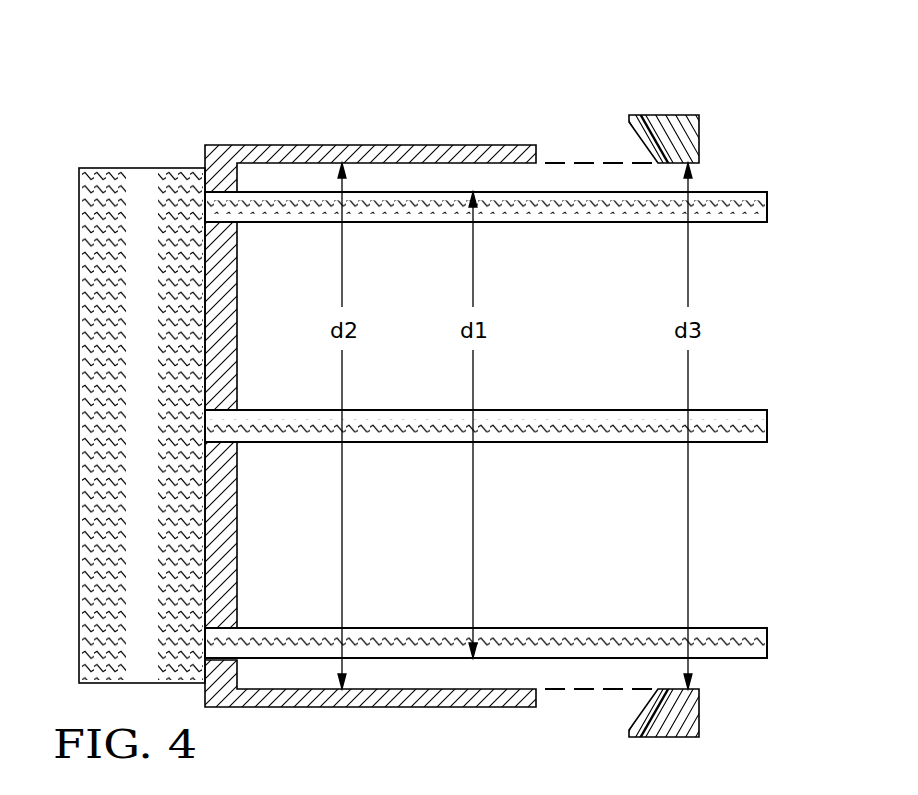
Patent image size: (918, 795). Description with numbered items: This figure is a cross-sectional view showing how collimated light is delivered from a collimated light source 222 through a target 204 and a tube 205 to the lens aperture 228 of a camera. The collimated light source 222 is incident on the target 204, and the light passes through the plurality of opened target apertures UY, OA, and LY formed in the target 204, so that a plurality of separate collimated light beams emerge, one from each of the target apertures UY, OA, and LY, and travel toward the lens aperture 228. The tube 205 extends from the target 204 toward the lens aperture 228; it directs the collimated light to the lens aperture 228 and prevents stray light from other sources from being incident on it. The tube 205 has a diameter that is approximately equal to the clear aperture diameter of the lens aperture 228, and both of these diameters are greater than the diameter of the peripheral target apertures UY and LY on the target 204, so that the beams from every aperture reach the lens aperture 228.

The collimated light source 222 is at (137, 168).
The target 204 is at (225, 144).
The tube 205 is at (421, 145).
The lens aperture 228 is at (664, 115).
The target aperture UY is at (225, 202).
The target aperture OA is at (225, 420).
The target aperture LY is at (225, 650).